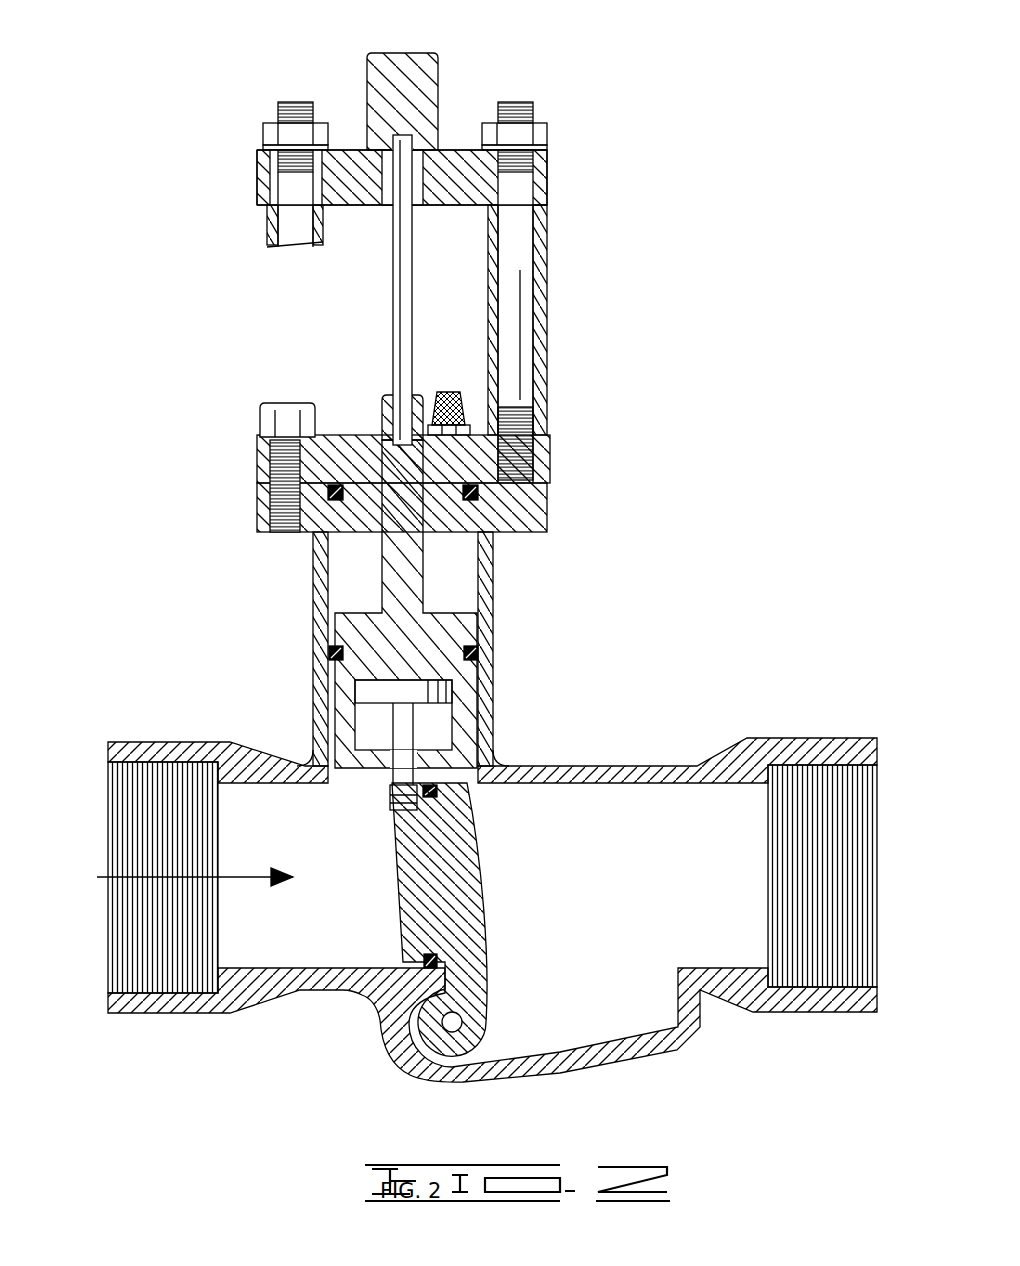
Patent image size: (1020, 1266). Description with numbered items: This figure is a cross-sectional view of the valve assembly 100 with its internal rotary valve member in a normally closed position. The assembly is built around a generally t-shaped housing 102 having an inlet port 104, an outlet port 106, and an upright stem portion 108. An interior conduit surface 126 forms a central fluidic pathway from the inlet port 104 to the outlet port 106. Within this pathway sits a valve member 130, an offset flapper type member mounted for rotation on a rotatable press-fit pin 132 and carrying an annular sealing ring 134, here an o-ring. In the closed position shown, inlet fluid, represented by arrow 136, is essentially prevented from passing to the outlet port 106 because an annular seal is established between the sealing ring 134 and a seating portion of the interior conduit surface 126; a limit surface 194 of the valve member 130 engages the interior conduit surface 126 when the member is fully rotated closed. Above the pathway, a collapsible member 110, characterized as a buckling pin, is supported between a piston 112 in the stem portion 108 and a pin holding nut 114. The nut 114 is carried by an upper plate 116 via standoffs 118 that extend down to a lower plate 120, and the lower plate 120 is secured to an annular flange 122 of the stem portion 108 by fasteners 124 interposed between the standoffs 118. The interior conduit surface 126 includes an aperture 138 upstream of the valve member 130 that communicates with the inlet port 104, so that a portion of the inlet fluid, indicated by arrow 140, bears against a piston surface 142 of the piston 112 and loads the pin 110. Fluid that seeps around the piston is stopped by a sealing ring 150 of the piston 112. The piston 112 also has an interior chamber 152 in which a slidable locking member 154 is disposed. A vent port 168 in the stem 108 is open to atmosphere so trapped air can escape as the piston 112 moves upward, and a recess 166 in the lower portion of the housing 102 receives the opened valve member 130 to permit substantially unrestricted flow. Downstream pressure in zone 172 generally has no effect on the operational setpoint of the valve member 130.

The valve assembly 100 is at (650, 152).
The housing 102 is at (668, 672).
The inlet port 104 is at (110, 738).
The outlet port 106 is at (877, 740).
The stem portion 108 is at (500, 628).
The collapsible member 110 is at (398, 298).
The piston 112 is at (390, 576).
The pin holding nut 114 is at (400, 55).
The upper plate 116 is at (268, 182).
The standoffs 118 is at (268, 232).
The lower plate 120 is at (262, 446).
The annular flange 122 is at (262, 499).
The fasteners 124 is at (266, 408).
The interior conduit surface 126 is at (578, 795).
The valve member 130 is at (486, 880).
The press-fit pin 132 is at (452, 1022).
The sealing ring 134 is at (424, 954).
The arrow 136 is at (232, 880).
The aperture 138 is at (350, 788).
The arrow 140 is at (362, 788).
The piston surface 142 is at (374, 795).
The sealing ring 150 is at (473, 652).
The interior chamber 152 is at (430, 722).
The locking member 154 is at (398, 729).
The recess 166 is at (610, 1023).
The vent port 168 is at (450, 392).
The zone 172 is at (713, 813).
The limit surface 194 is at (408, 972).